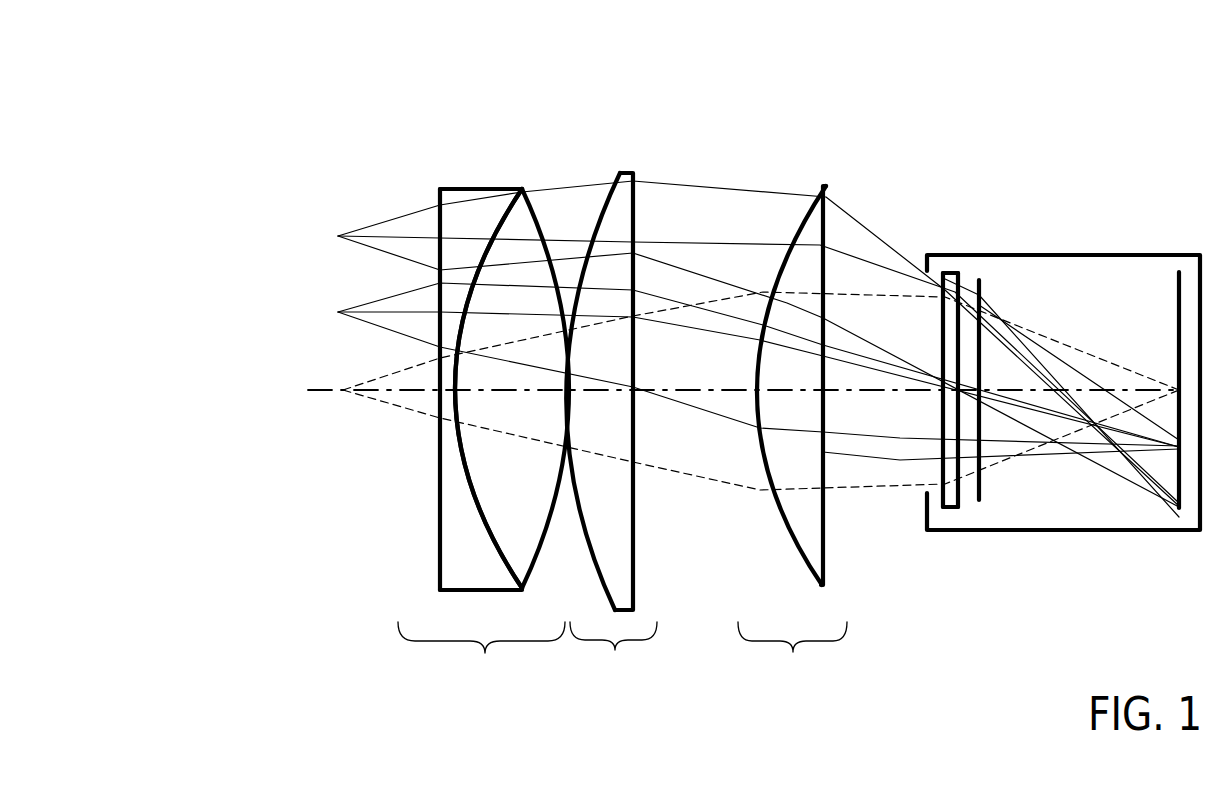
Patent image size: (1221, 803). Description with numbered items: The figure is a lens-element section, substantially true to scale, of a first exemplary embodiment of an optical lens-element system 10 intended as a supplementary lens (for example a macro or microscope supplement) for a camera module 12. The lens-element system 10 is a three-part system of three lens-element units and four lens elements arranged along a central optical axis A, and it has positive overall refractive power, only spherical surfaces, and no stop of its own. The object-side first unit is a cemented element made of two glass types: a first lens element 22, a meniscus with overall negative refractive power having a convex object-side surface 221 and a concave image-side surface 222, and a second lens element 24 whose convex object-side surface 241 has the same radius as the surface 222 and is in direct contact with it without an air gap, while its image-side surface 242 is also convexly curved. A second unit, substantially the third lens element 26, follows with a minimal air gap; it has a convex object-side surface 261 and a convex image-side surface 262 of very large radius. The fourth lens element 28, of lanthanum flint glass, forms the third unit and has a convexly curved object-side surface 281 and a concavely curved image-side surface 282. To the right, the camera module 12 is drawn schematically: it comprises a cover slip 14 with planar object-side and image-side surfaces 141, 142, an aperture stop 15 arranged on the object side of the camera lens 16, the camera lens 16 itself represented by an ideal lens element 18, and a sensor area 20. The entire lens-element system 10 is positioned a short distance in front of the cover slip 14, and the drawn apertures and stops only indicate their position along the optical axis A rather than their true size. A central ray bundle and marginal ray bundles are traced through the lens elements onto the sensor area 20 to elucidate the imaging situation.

The optical lens-element system 10 is at (270, 130).
The central optical axis A is at (308, 392).
The first lens element 22 is at (448, 190).
The object-side surface of the first lens element 221 is at (438, 192).
The image-side surface of the first lens element 222 is at (526, 200).
The second lens element 24 is at (533, 212).
The object-side surface of the second lens element 241 is at (508, 214).
The image-side surface of the second lens element 242 is at (546, 216).
The third lens element 26 is at (627, 173).
The object-side surface of the third lens element 261 is at (592, 216).
The image-side surface of the third lens element 262 is at (636, 198).
The fourth lens element 28 is at (826, 186).
The object-side surface of the fourth lens element 281 is at (801, 226).
The image-side surface of the fourth lens element 282 is at (826, 239).
The camera module 12 is at (963, 276).
The cover slip 14 is at (943, 273).
The object-side surface of the coverslip 141 is at (943, 501).
The image-side surface of the coverslip 142 is at (958, 500).
The aperture stop 15 is at (980, 280).
The camera lens 16 is at (981, 290).
The ideal lens element 18 is at (981, 327).
The sensor area 20 is at (1178, 292).